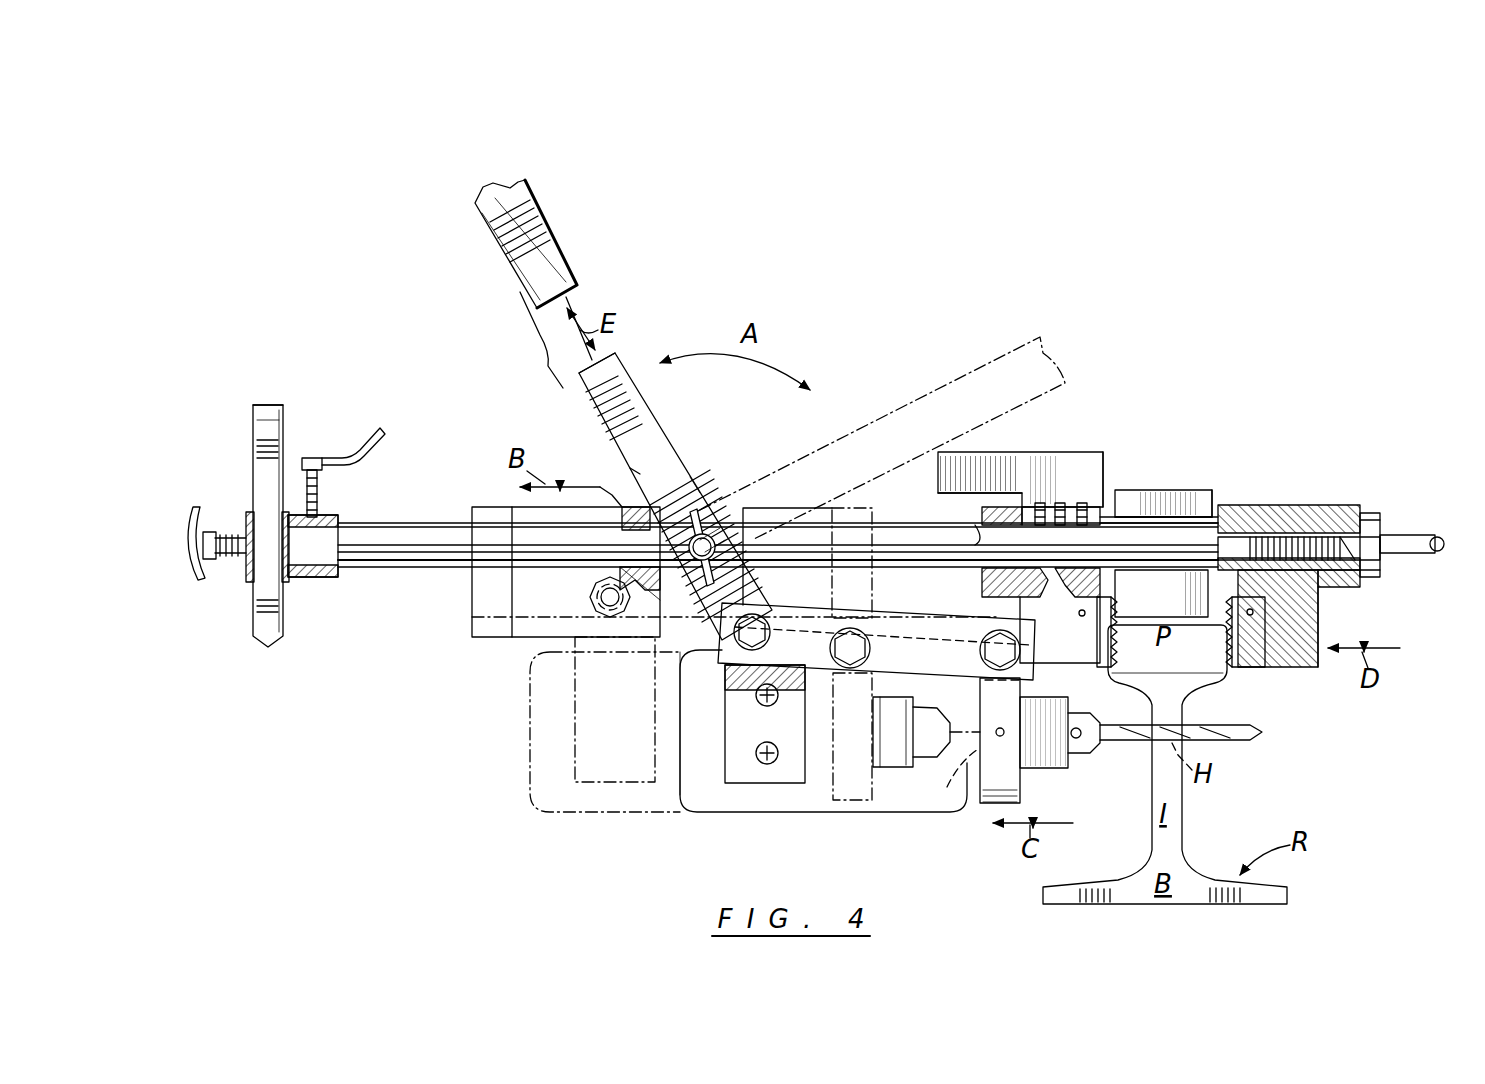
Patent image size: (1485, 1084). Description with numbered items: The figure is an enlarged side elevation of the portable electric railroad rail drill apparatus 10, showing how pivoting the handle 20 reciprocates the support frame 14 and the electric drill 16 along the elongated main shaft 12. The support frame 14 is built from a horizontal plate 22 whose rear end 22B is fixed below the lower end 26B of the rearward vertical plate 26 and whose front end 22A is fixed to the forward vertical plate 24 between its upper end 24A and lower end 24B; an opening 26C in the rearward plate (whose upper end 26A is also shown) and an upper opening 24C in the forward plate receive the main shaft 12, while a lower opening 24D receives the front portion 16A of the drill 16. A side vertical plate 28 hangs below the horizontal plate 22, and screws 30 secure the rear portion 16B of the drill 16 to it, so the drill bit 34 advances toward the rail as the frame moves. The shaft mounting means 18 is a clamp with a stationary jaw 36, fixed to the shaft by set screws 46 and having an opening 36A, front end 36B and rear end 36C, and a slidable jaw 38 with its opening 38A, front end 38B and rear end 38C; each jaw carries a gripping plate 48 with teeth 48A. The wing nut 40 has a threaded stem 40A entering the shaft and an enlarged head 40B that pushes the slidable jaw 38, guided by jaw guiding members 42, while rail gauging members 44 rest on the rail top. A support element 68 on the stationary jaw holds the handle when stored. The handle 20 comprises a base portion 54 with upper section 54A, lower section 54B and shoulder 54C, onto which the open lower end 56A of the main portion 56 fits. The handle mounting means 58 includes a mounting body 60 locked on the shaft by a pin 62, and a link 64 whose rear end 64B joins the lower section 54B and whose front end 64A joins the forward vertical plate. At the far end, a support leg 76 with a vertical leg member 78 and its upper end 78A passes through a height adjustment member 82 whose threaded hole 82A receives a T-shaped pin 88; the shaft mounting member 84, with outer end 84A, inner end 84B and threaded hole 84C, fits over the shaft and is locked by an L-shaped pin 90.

The portable electric railroad rail drill apparatus 10 is at (1165, 405).
The main shaft 12 is at (407, 572).
The support frame 14 is at (470, 625).
The electric drill 16 is at (705, 818).
The front portion of electric drill 16A is at (1043, 770).
The rear portion of electric drill 16B is at (683, 780).
The shaft mounting means 18 is at (1215, 460).
The handle 20 is at (540, 372).
The horizontal plate 22 is at (536, 617).
The front end of horizontal plate 22A is at (876, 641).
The rear end of horizontal plate 22B is at (600, 632).
The forward vertical plate 24 is at (982, 607).
The upper end of forward vertical plate 24A is at (1000, 507).
The lower end of forward vertical plate 24B is at (993, 803).
The upper opening of forward vertical plate 24C is at (975, 528).
The lower opening of forward vertical plate 24D is at (980, 752).
The rearward vertical plate 26 is at (622, 515).
The upper end of rearward vertical plate 26A is at (620, 506).
The lower end of rearward vertical plate 26B is at (667, 585).
The opening of rearward vertical plate 26C is at (628, 510).
The side vertical plate 28 is at (760, 774).
The screws 30 is at (775, 745).
The drill bit 34 is at (1254, 736).
The stationary jaw 36 is at (1060, 630).
The opening of stationary jaw 36A is at (1130, 527).
The front end of stationary jaw 36B is at (1092, 578).
The rear end of stationary jaw 36C is at (990, 570).
The slidable jaw 38 is at (1289, 612).
The opening of slidable jaw 38A is at (1247, 527).
The front end of slidable jaw 38B is at (1233, 583).
The rear end of slidable jaw 38C is at (1318, 625).
The wing nut 40 is at (1437, 538).
The externally threaded stem of wing nut 40A is at (1337, 550).
The enlarged head of wing nut 40B is at (1343, 508).
The jaw guiding members 42 is at (1180, 520).
The rail gauging members 44 is at (1178, 522).
The set screws 46 is at (1082, 503).
The gripping plate 48 is at (1102, 661).
The teeth 48A is at (1222, 656).
The base portion of handle 54 is at (700, 446).
The upper section of handle base portion 54A is at (610, 385).
The lower section of handle base portion 54B is at (690, 472).
The shoulder 54C is at (632, 468).
The main portion of handle 56 is at (522, 205).
The open lower end of handle main portion 56A is at (568, 290).
The handle mounting means 58 is at (755, 512).
The mounting body 60 is at (765, 496).
The pin 62 is at (698, 508).
The link 64 is at (745, 655).
The front end of link 64A is at (997, 673).
The rear end of link 64B is at (740, 603).
The support element 68 is at (977, 530).
The support leg 76 is at (280, 397).
The vertical leg member 78 is at (255, 622).
The upper end of vertical leg member 78A is at (262, 412).
The height adjustment member 82 is at (248, 512).
The internally threaded hole of height adjustment member 82A is at (240, 560).
The shaft mounting member 84 is at (320, 578).
The outer end of shaft mounting member 84A is at (292, 578).
The inner end of shaft mounting member 84B is at (340, 519).
The internally threaded hole of shaft mounting member 84C is at (320, 514).
The T-shaped pin 88 is at (194, 507).
The L-shaped pin 90 is at (379, 432).